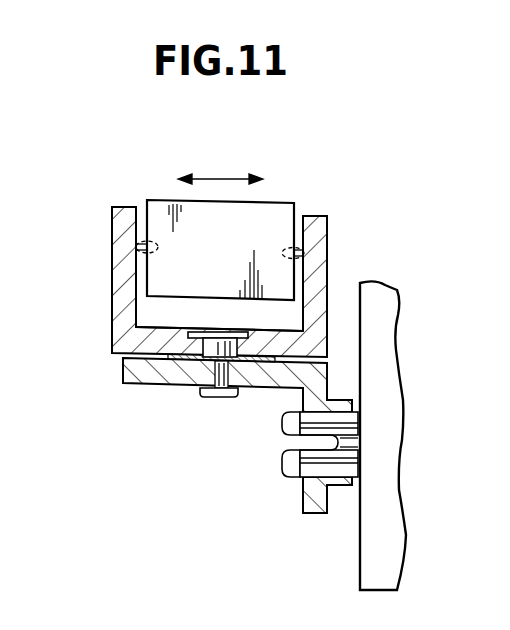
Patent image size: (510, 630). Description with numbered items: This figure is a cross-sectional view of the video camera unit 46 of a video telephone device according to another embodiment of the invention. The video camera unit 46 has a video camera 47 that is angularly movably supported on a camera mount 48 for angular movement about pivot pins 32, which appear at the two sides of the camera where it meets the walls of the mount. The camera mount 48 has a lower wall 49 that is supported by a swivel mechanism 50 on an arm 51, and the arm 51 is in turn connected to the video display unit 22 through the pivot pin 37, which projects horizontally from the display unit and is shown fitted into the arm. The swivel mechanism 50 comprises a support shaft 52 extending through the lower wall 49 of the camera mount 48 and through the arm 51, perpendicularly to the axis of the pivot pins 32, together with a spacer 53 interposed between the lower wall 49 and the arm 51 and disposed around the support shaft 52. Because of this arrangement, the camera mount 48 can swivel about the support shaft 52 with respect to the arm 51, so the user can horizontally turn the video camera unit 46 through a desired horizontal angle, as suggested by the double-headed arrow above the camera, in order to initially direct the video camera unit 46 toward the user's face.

The video display unit 22 is at (387, 530).
The pivot pins 32 is at (137, 245).
The pivot pin 37 is at (348, 440).
The video camera unit 46 is at (296, 192).
The video camera 47 is at (160, 210).
The camera mount 48 is at (112, 279).
The lower wall 49 is at (143, 338).
The swivel mechanism 50 is at (216, 405).
The arm 51 is at (140, 384).
The support shaft 52 is at (197, 361).
The spacer 53 is at (263, 389).